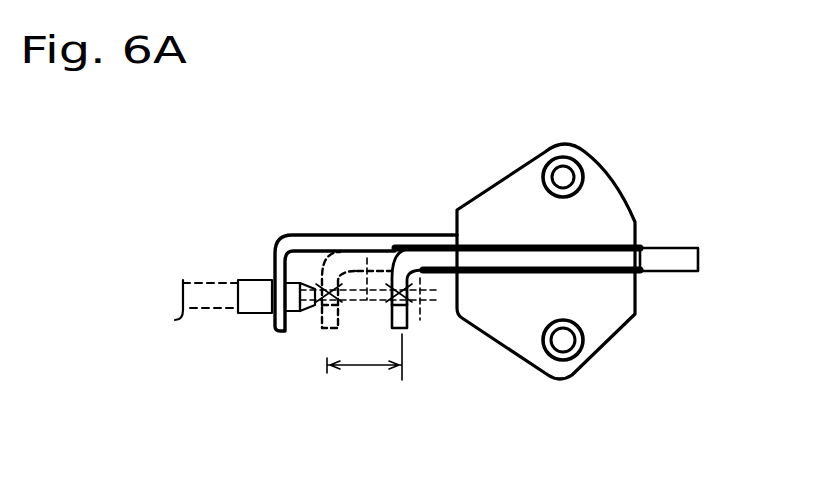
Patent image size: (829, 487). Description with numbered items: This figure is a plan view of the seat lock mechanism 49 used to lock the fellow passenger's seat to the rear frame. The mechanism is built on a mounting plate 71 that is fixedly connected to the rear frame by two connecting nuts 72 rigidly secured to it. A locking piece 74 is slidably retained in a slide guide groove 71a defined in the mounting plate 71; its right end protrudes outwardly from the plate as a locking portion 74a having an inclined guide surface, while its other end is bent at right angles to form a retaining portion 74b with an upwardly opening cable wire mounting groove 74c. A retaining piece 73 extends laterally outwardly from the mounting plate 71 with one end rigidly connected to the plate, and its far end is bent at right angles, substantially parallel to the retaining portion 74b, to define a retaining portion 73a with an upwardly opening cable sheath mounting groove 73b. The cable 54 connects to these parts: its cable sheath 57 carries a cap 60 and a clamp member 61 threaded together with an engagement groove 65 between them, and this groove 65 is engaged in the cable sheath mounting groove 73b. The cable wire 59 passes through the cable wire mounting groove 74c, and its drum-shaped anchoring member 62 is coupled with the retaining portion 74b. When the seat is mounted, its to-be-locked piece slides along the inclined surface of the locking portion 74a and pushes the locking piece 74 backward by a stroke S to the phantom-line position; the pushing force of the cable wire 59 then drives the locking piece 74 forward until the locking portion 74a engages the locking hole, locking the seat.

The seat lock mechanism 49 is at (508, 364).
The cable 54 is at (198, 280).
The cable sheath 57 is at (173, 322).
The cable wire 59 is at (366, 236).
The cap 60 is at (297, 333).
The clamp member 61 is at (253, 280).
The anchoring member 62 is at (420, 320).
The engagement groove 65 is at (322, 290).
The mounting plate 71 is at (603, 198).
The slide guide groove 71a is at (612, 275).
The connecting nuts 72 is at (555, 162).
The retaining piece 73 is at (428, 236).
The retaining portion 73a is at (277, 335).
The cable sheath mounting groove 73b is at (268, 313).
The locking piece 74 is at (318, 246).
The locking portion 74a is at (680, 258).
The retaining portion 74b is at (330, 330).
The cable wire mounting groove 74c is at (292, 236).
The stroke S is at (362, 366).